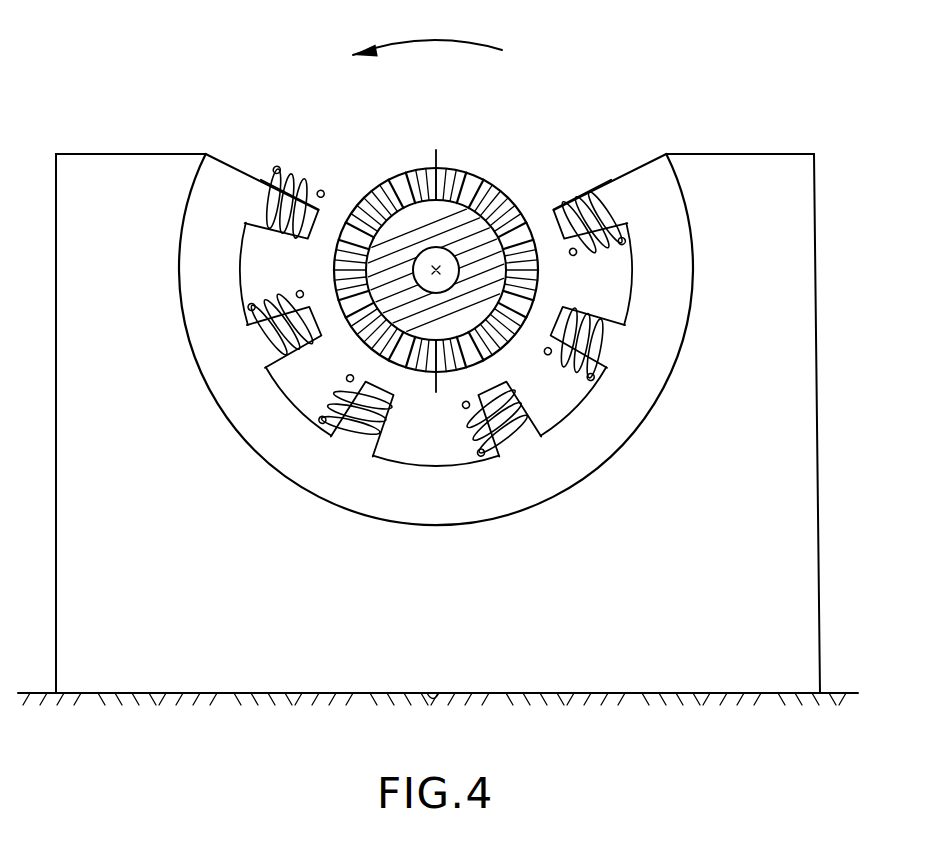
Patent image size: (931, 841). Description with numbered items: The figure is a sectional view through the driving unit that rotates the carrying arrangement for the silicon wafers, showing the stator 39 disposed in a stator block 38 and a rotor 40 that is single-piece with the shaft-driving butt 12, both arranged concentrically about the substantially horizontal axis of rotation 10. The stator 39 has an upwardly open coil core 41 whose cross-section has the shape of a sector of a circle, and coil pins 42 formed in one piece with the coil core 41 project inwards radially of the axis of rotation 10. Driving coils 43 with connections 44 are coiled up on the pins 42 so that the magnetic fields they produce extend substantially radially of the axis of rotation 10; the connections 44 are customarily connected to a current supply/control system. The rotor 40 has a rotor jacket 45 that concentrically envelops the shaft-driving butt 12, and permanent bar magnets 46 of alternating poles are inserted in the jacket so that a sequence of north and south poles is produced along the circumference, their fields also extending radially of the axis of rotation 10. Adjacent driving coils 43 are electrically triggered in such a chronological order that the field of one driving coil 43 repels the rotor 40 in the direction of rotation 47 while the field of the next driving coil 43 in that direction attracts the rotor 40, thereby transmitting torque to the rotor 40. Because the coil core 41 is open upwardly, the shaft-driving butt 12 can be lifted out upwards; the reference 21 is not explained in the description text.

The axis of rotation 10 is at (432, 250).
The shaft-driving butt 12 is at (411, 241).
The base surface 21 is at (433, 702).
The stator block 38 is at (203, 630).
The stator 39 is at (612, 466).
The rotor 40 is at (500, 176).
The coil core 41 is at (436, 345).
The coil pins 42 is at (272, 186).
The driving coils 43 is at (355, 445).
The connections 44 is at (592, 365).
The rotor jacket 45 is at (408, 190).
The permanent bar magnets 46 is at (367, 195).
The direction of rotation 47 is at (427, 42).